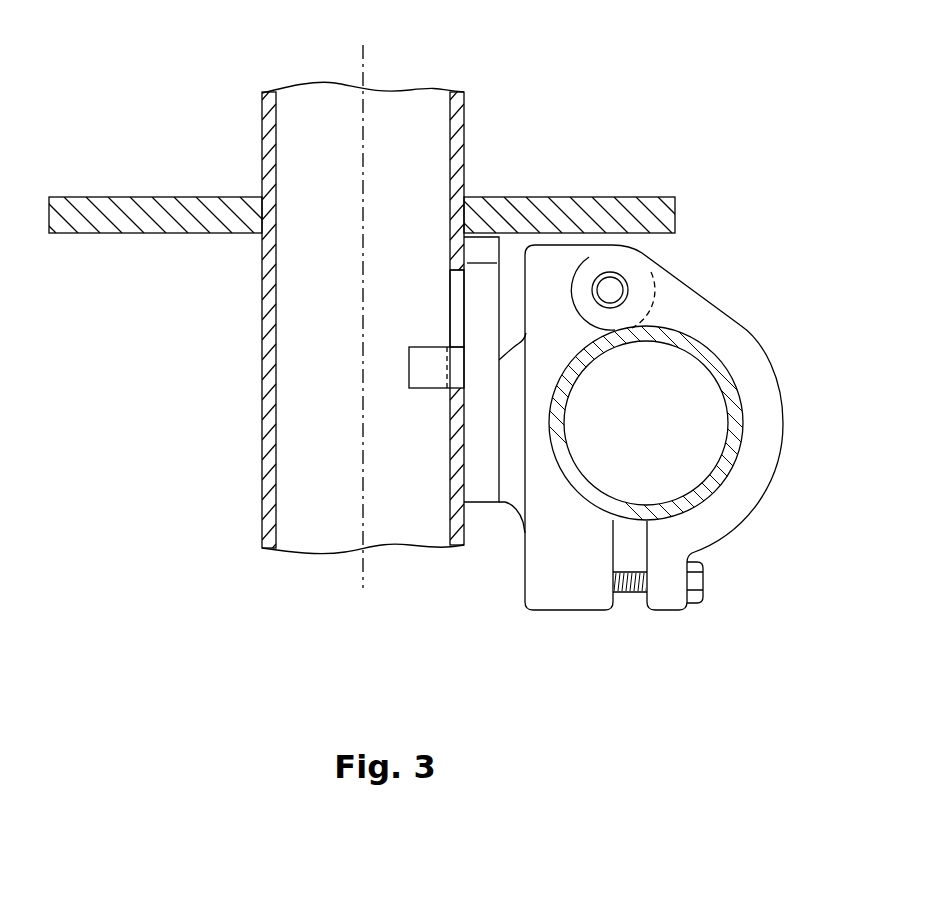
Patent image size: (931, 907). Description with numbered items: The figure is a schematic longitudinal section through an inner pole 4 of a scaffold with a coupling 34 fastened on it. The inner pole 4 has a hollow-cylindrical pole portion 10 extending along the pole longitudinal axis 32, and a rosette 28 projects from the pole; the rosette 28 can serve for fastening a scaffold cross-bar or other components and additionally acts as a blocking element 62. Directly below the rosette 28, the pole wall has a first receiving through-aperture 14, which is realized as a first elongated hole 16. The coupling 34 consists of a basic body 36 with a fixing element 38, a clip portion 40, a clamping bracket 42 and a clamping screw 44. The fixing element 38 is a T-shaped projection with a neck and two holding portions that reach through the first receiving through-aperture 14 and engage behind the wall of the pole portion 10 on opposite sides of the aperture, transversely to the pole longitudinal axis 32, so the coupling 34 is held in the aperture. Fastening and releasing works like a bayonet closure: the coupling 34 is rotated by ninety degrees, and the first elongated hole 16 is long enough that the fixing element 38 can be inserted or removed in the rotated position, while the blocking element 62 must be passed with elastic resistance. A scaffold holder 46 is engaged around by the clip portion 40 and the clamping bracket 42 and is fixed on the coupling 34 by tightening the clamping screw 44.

The inner pole 4 is at (300, 155).
The hollow-cylindrical pole portion 10 is at (236, 382).
The first receiving through-aperture 14 is at (393, 302).
The first elongated hole 16 is at (450, 298).
The rosette 28 is at (357, 168).
The blocking element 62 is at (526, 218).
The pole longitudinal axis 32 is at (363, 117).
The coupling 34 is at (716, 278).
The basic body 36 is at (481, 440).
The fixing element 38 is at (423, 372).
The clip portion 40 is at (575, 588).
The clamping bracket 42 is at (717, 515).
The clamping screw 44 is at (693, 596).
The scaffold holder 46 is at (718, 370).